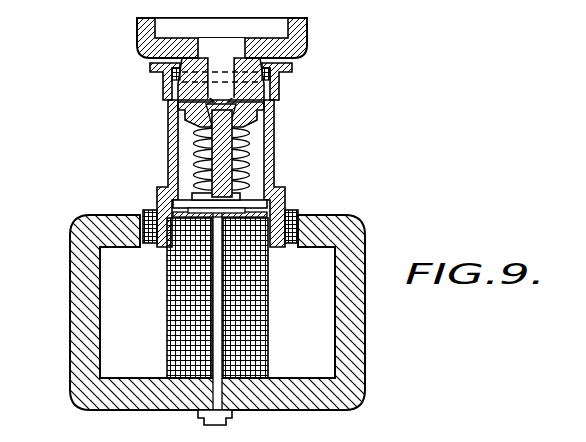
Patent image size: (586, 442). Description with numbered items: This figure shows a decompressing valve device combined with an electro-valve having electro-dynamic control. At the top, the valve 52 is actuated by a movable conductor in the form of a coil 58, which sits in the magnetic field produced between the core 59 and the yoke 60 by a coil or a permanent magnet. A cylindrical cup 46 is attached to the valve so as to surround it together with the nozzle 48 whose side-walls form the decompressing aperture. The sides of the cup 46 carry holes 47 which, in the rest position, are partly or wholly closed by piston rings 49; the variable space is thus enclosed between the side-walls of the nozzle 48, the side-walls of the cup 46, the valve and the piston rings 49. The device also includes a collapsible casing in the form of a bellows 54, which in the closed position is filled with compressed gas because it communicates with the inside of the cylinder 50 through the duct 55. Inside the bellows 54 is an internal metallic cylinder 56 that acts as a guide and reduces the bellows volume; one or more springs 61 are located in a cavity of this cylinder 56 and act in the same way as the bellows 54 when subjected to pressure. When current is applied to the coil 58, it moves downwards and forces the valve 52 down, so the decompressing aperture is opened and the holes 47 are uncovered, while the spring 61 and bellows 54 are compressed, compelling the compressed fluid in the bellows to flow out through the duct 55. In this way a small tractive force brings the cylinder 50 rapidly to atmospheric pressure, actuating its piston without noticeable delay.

The cylindrical cup 46 is at (150, 65).
The holes 47 is at (280, 84).
The nozzle 48 is at (268, 63).
The piston rings 49 is at (170, 78).
The cylinder 50 is at (302, 26).
The valve 52 is at (185, 120).
The bellows 54 is at (243, 150).
The duct 55 is at (258, 112).
The internal metallic cylinder 56 is at (273, 190).
The coil 58 is at (290, 244).
The core 59 is at (172, 325).
The yoke 60 is at (80, 267).
The spring 61 is at (195, 167).